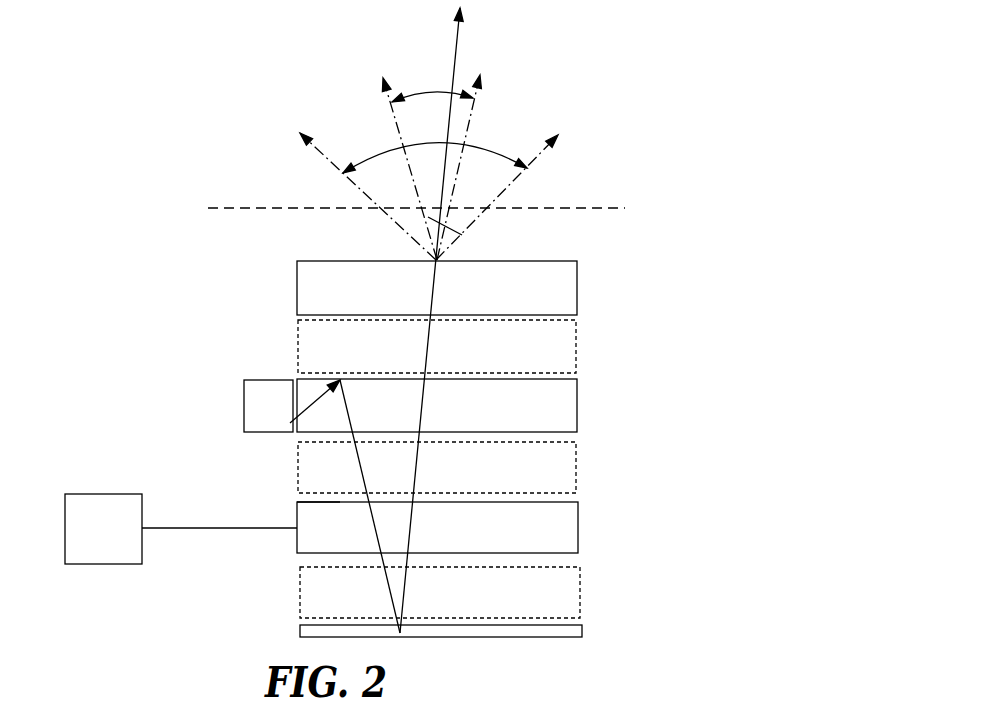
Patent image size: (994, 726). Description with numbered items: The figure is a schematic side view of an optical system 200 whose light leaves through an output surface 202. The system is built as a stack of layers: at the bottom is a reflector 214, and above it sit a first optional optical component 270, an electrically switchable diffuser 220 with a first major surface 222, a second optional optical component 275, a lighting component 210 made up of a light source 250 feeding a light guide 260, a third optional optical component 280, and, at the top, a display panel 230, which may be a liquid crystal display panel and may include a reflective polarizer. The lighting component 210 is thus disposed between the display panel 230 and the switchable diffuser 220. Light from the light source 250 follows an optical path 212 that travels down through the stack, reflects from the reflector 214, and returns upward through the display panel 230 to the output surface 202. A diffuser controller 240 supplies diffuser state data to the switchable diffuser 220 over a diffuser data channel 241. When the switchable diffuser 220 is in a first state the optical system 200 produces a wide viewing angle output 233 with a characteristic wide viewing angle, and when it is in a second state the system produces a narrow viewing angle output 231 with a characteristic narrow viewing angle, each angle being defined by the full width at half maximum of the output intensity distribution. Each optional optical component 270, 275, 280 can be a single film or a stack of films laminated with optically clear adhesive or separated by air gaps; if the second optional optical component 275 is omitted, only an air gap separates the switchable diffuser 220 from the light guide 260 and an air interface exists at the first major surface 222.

The optical system 200 is at (85, 248).
The output surface 202 is at (598, 208).
The lighting component 210 is at (298, 376).
The optical path 212 is at (418, 472).
The reflector 214 is at (562, 633).
The electrically switchable diffuser 220 is at (562, 527).
The first major surface 222 is at (325, 501).
The display panel 230 is at (562, 288).
The narrow viewing angle output 231 is at (403, 131).
The wide viewing angle output 233 is at (372, 202).
The diffuser controller 240 is at (98, 493).
The diffuser data channel 241 is at (203, 527).
The light source 250 is at (243, 401).
The light guide 260 is at (562, 406).
The first optional optical component 270 is at (562, 600).
The second optional optical component 275 is at (562, 470).
The third optional optical component 280 is at (562, 348).